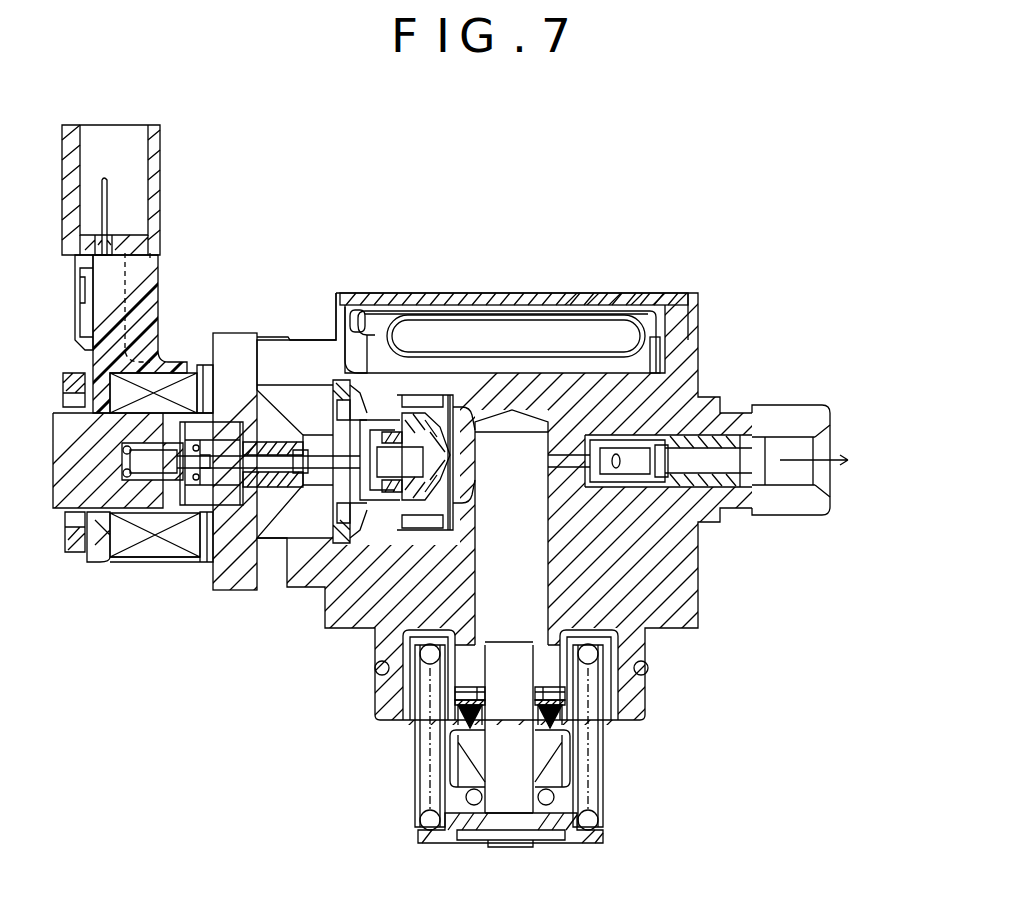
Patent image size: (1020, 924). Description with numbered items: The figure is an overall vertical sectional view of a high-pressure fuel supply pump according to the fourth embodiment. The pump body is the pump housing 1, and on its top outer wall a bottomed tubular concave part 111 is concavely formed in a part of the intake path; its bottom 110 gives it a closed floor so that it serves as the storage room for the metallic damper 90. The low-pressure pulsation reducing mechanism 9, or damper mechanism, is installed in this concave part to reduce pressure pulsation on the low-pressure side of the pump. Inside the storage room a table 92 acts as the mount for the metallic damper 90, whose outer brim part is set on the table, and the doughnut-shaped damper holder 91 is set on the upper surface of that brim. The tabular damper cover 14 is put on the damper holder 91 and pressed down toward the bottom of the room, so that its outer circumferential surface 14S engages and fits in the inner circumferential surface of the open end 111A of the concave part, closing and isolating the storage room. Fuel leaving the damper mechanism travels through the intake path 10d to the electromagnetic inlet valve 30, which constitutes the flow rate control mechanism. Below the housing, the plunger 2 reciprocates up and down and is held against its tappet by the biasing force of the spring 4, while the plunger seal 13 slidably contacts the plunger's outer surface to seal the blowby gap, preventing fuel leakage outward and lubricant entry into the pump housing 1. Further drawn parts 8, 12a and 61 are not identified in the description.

The pump housing 1 is at (700, 335).
The plunger 2 is at (513, 750).
The spring 4 is at (595, 798).
The outlet passage 8 is at (620, 437).
The low-pressure pulsation reducing mechanism 9 is at (470, 292).
The intake path 10d is at (312, 365).
The fuel outlet fitting 12a is at (773, 447).
The plunger seal 13 is at (575, 715).
The tabular damper cover 14 is at (548, 295).
The outer circumferential surface of damper cover 14S is at (688, 300).
The electromagnetic inlet valve 30 is at (213, 575).
The O-ring 61 is at (648, 668).
The metallic damper 90 is at (412, 317).
The doughnut-shaped damper holder 91 is at (355, 345).
The table 92 is at (657, 360).
The bottom 110 is at (600, 372).
The tubular concave part 111 is at (333, 313).
The open end 111A is at (693, 330).